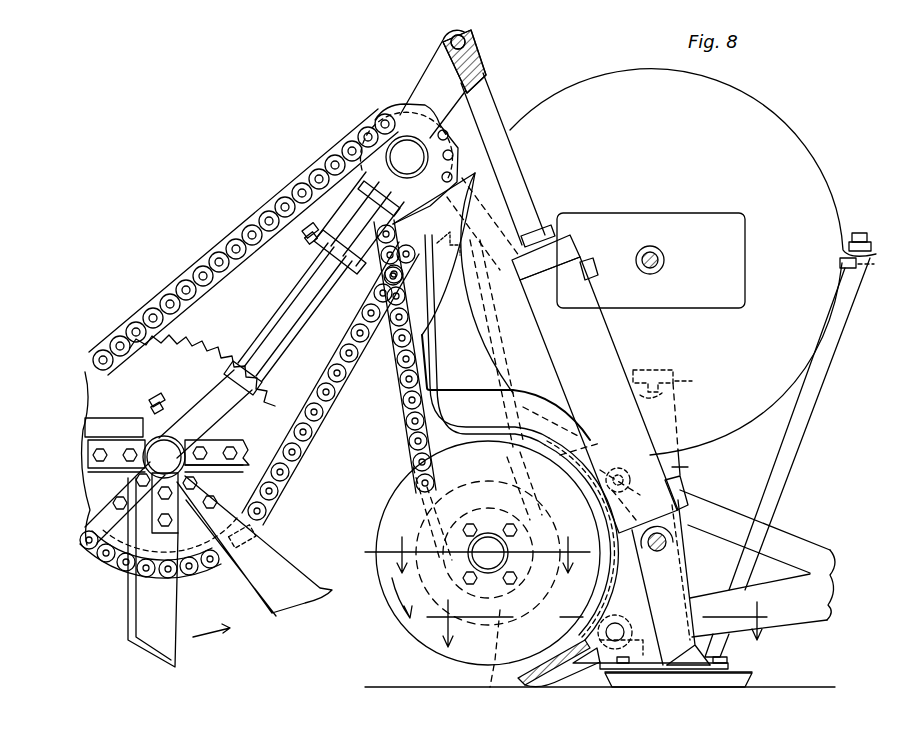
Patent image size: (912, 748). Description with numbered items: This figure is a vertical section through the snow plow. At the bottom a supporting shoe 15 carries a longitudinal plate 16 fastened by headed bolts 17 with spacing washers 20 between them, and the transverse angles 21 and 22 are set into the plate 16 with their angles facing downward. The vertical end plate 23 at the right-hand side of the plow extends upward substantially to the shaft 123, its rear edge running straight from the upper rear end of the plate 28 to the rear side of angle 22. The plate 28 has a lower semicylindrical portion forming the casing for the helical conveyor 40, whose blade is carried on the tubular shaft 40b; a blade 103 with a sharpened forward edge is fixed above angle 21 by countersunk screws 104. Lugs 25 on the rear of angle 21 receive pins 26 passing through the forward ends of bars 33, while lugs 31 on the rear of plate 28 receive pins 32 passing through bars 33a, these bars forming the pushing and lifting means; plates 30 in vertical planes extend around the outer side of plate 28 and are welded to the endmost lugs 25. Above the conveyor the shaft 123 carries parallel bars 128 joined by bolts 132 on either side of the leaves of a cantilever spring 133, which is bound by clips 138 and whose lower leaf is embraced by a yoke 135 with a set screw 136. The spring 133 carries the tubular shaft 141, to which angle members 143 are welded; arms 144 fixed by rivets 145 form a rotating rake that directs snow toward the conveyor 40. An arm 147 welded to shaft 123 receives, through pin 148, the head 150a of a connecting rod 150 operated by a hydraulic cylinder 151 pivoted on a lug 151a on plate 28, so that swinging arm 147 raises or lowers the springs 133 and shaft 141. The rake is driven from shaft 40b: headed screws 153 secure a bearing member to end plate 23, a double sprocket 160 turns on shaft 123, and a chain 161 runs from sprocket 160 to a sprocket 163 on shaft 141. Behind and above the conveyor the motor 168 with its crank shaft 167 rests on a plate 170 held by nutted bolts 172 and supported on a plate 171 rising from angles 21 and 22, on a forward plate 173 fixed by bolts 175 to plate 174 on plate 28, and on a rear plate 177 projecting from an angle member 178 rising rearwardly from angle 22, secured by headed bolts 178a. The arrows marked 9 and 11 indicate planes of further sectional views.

The section line 9- 9 is at (600, 629).
The section line 11- 11 is at (482, 561).
The supporting shoes 15 is at (740, 684).
The plates 16 is at (672, 667).
The headed bolts 17 is at (733, 658).
The spacing washers 20 is at (622, 675).
The angle 21 is at (583, 665).
The angle 22 is at (693, 655).
The end plate 23 is at (477, 167).
The lugs 25 is at (623, 614).
The pins 26 is at (610, 626).
The plate 28 is at (510, 427).
The plates 30 is at (458, 389).
The lugs 31 is at (592, 466).
The pins 32 is at (627, 467).
The bars 33 is at (805, 612).
The bars 33a is at (788, 538).
The conveyor 40 is at (395, 620).
The central shaft 40b is at (467, 550).
The blade 103 is at (533, 680).
The headed countersunk screws 104 is at (567, 645).
The shaft 123 is at (390, 150).
The bars 128 is at (370, 213).
The headed and nutted bolts 132 is at (306, 243).
The cantilever spring 133 is at (293, 302).
The yoke 135 is at (193, 407).
The set screw 136 is at (159, 396).
The clips 138 is at (254, 382).
The tubular shaft 141 is at (155, 422).
The angle members 143 is at (263, 532).
The arms 144 is at (285, 573).
The headed rivets 145 is at (267, 480).
The arm 147 is at (425, 85).
The connecting pin 148 is at (467, 42).
The connecting rod 150 is at (492, 108).
The head 150a is at (485, 65).
The hydraulic cylinder 151 is at (603, 350).
The lug 151a is at (655, 556).
The headed screws 153 is at (515, 532).
The double sprocket 160 is at (378, 117).
The chain 161 is at (257, 217).
The sprocket 163 is at (207, 360).
The crank shaft 167 is at (665, 256).
The motor 168 is at (780, 134).
The plate 170 is at (652, 368).
The plate 171 is at (688, 467).
The nutted bolts 172 is at (692, 380).
The plate 173 is at (425, 305).
The plate 174 is at (448, 260).
The bolts 175 is at (462, 290).
The plate 177 is at (842, 266).
The angle member 178 is at (808, 415).
The headed bolts 178a is at (855, 232).